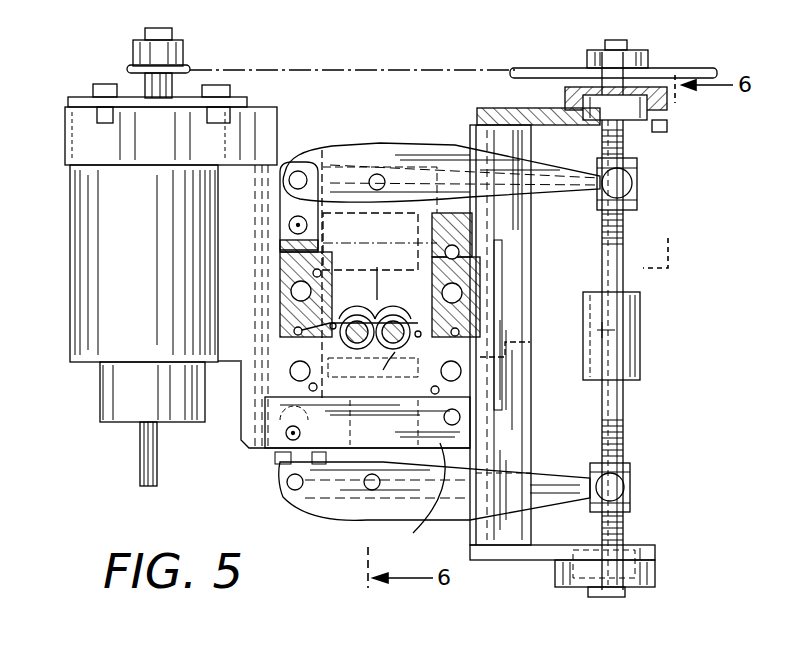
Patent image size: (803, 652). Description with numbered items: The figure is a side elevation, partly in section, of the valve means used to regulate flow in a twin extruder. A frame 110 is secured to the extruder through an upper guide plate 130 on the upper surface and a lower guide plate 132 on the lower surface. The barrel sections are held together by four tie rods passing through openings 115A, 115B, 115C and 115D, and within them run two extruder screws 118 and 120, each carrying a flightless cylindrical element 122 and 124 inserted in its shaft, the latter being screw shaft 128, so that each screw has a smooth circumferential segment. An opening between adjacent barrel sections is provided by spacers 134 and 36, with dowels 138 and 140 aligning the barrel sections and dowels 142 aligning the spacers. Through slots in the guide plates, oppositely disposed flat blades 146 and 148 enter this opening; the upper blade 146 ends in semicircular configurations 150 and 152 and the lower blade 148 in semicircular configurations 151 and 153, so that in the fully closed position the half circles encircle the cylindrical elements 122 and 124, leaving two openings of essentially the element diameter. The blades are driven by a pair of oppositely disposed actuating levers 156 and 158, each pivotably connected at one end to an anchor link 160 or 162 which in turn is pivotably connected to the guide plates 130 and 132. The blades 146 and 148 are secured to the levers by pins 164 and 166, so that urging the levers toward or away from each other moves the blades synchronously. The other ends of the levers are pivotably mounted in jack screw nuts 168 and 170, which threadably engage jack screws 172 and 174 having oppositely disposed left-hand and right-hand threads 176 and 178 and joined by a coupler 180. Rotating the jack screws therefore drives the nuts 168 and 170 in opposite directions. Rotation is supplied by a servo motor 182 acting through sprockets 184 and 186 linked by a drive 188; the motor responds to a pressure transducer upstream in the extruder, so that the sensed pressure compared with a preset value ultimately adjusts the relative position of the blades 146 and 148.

The left bearing block 36 is at (314, 273).
The frame 110 is at (523, 394).
The opening 115A is at (291, 292).
The opening 115B is at (291, 378).
The opening 115C is at (463, 290).
The opening 115D is at (462, 375).
The extruder screw 118 is at (295, 330).
The extruder screw 120 is at (504, 325).
The flightless cylindrical element 122 is at (327, 410).
The flightless cylindrical element 124 is at (399, 360).
The screw shaft 128 is at (418, 336).
The upper guide plate 130 is at (322, 200).
The lower guide plate 132 is at (429, 501).
The spacer 134 is at (470, 260).
The dowel 138 is at (283, 333).
The dowel 140 is at (460, 330).
The dowel 142 is at (288, 252).
The upper blade 146 is at (363, 264).
The lower blade 148 is at (363, 392).
The semicircular configuration 150 is at (356, 315).
The semicircular configuration 151 is at (273, 365).
The semicircular configuration 152 is at (396, 315).
The semicircular configuration 153 is at (528, 341).
The actuating lever 156 is at (421, 151).
The actuating lever 158 is at (462, 548).
The anchor link 160 is at (290, 166).
The anchor link 162 is at (290, 466).
The pin 164 is at (378, 174).
The pin 166 is at (370, 490).
The jack screw nut 168 is at (638, 174).
The jack screw nut 170 is at (632, 467).
The jack screw 172 is at (625, 233).
The jack screw 174 is at (624, 440).
The thread 176 is at (685, 243).
The thread 178 is at (624, 535).
The coupler 180 is at (642, 330).
The servo motor 182 is at (82, 281).
The sprocket 184 is at (128, 68).
The sprocket 186 is at (702, 70).
The drive 188 is at (303, 70).